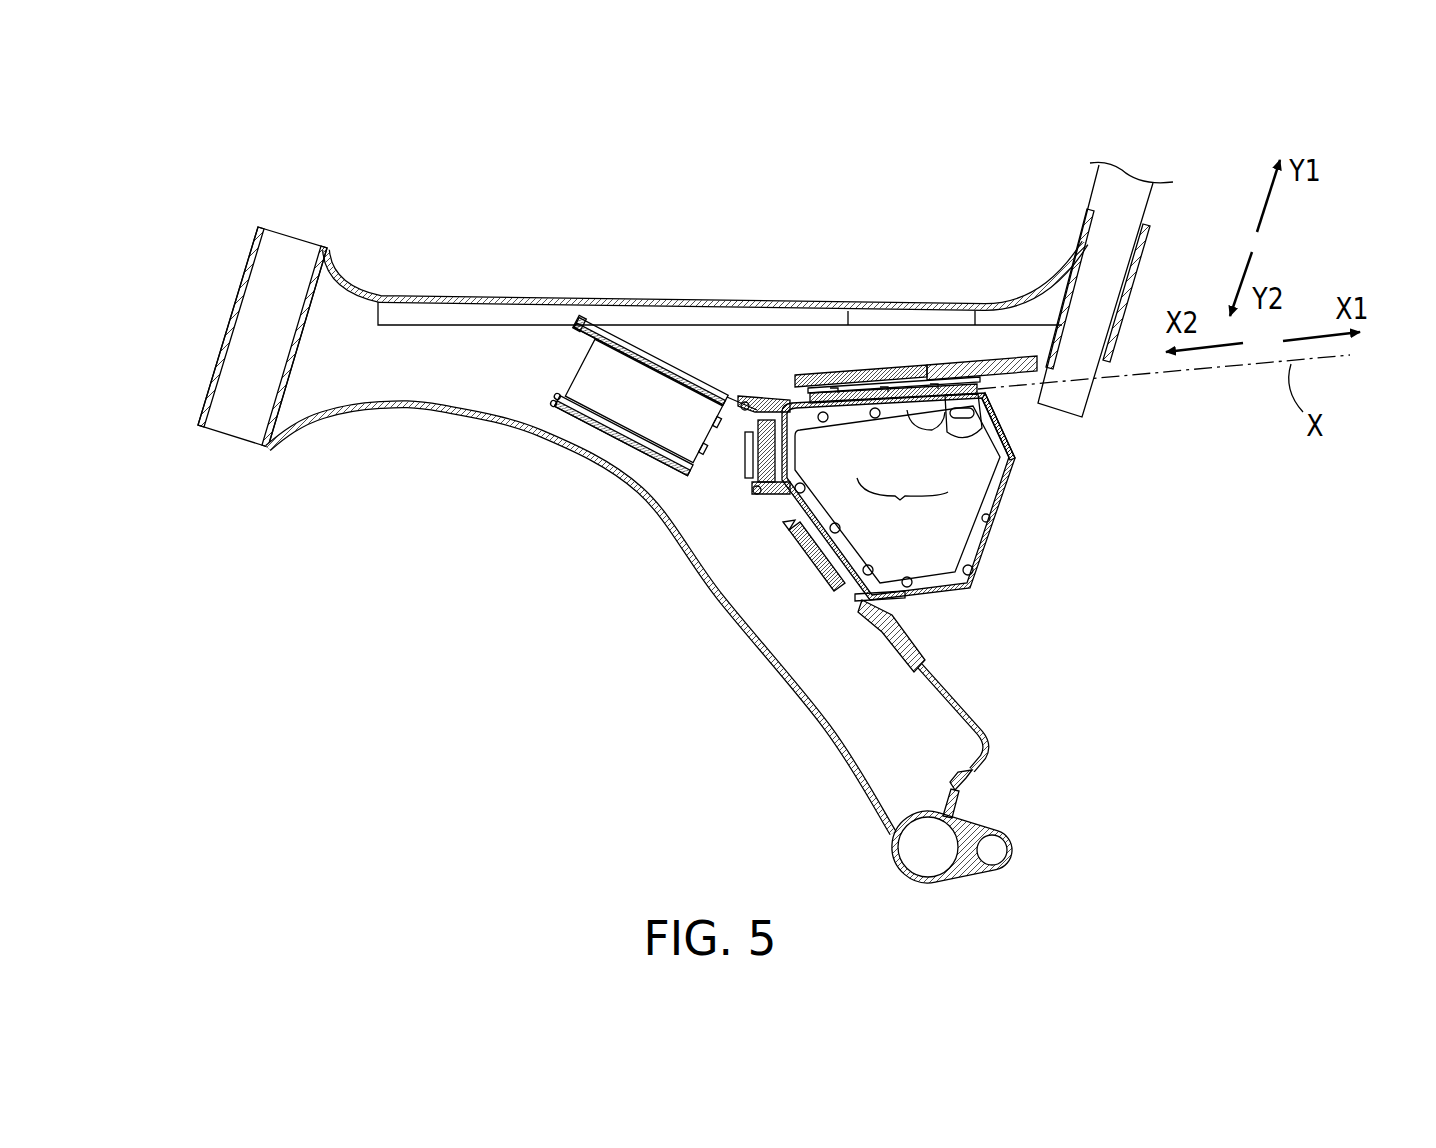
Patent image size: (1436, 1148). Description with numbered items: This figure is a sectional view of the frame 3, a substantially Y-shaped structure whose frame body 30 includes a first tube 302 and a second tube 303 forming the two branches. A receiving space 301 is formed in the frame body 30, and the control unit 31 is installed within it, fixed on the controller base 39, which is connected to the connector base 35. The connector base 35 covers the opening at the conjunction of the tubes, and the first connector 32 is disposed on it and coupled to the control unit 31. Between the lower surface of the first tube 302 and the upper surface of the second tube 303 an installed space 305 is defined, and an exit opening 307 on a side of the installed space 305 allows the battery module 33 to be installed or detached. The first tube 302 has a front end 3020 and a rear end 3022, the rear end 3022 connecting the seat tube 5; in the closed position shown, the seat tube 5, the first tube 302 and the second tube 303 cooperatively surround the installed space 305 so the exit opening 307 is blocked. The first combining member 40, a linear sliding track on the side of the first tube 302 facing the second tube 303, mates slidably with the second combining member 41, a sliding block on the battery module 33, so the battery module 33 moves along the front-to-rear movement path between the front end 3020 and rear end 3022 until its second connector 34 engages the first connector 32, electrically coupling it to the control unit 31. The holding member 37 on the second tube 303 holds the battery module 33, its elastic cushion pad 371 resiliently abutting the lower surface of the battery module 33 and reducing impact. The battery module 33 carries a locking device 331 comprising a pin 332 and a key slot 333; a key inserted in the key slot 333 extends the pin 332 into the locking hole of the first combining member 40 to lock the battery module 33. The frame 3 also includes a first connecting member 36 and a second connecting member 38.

The frame 3 is at (822, 133).
The frame body 30 is at (472, 296).
The receiving space 301 is at (680, 342).
The first tube 302 is at (913, 303).
The front end 3020 is at (798, 299).
The rear end 3022 is at (1017, 298).
The second tube 303 is at (817, 720).
The installed space 305 is at (993, 707).
The exit opening 307 is at (1095, 428).
The seat tube 5 is at (1140, 200).
The control unit 31 is at (628, 407).
The first connector 32 is at (773, 483).
The battery module 33 is at (958, 602).
The locking device 331 is at (902, 508).
The pin 332 is at (928, 400).
The key slot 333 is at (955, 428).
The second connector 34 is at (753, 460).
The connector base 35 is at (763, 398).
The first connecting member 36 is at (838, 375).
The holding member 37 is at (850, 608).
The cushion pad 371 is at (888, 632).
The second connecting member 38 is at (812, 562).
The controller base 39 is at (743, 400).
The first combining member 40 is at (890, 386).
The second combining member 41 is at (922, 392).